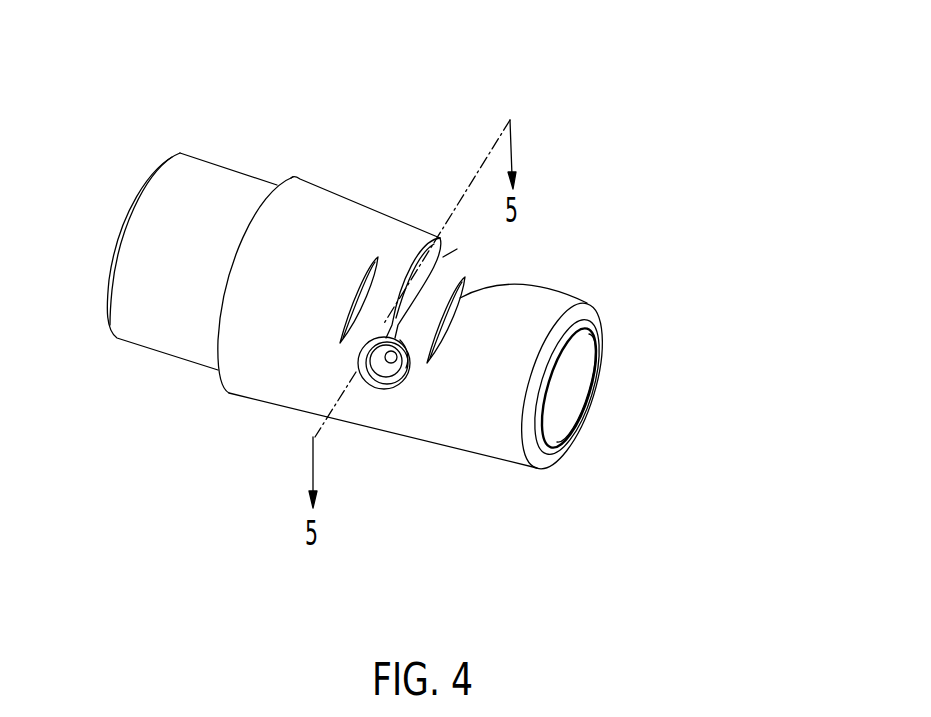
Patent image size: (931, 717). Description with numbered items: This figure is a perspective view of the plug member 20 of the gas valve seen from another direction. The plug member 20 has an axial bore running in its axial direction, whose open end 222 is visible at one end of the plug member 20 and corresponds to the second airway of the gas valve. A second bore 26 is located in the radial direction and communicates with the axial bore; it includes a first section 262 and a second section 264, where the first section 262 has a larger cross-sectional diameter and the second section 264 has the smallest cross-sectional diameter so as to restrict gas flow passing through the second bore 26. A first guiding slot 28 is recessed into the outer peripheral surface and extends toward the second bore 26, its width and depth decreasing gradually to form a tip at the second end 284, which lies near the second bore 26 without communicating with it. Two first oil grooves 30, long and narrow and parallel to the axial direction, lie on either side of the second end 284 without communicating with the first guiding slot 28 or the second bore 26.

The plug member 20 is at (619, 172).
The open end 222 is at (582, 380).
The second bore 26 is at (393, 456).
The first section 262 is at (374, 383).
The second section 264 is at (393, 370).
The first guiding slot 28 is at (457, 249).
The second end 284 is at (401, 335).
The first oil groove 30 is at (358, 282).